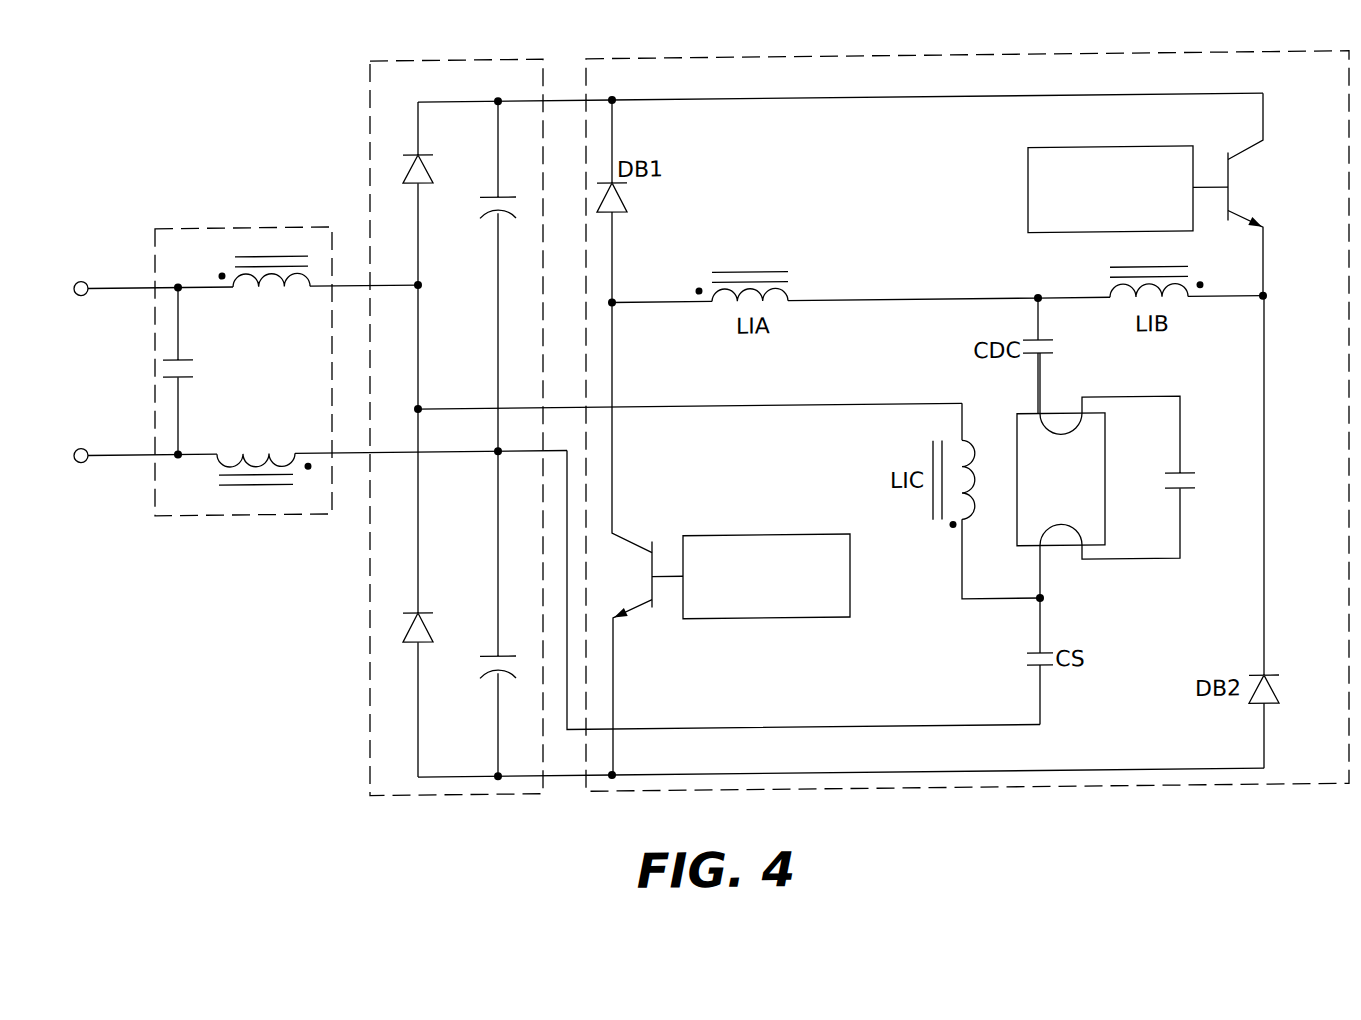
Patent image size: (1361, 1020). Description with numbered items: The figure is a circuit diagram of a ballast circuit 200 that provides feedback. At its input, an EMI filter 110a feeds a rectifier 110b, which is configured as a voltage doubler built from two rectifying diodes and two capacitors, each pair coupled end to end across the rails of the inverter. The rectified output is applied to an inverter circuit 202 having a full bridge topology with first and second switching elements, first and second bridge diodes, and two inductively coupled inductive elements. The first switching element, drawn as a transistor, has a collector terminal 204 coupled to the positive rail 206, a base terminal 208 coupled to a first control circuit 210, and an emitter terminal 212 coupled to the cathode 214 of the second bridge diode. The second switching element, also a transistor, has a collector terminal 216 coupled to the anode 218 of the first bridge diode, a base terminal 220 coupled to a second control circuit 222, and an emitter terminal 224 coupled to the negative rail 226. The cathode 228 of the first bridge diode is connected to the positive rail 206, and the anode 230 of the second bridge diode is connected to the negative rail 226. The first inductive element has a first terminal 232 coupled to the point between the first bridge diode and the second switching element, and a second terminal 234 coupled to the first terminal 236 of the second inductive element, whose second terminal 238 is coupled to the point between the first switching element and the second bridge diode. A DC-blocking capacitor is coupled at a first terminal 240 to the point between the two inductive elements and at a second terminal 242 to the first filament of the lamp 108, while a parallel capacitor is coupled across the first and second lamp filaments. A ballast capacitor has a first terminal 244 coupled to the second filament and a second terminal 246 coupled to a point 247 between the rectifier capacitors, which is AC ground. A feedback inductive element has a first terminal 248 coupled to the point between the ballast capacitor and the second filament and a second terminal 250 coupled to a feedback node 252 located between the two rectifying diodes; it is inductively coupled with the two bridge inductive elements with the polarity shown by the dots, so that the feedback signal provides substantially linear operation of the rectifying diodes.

The ballast circuit 200 is at (713, 40).
The inverter circuit 202 is at (925, 91).
The collector terminal 204 is at (1264, 125).
The positive rail 206 is at (1160, 98).
The base terminal 208 is at (1213, 189).
The first control circuit 210 is at (1113, 150).
The emitter terminal 212 is at (1240, 224).
The cathode 214 is at (1264, 628).
The collector terminal 216 is at (614, 526).
The anode 218 is at (612, 239).
The base terminal 220 is at (668, 578).
The second control circuit 222 is at (760, 620).
The emitter terminal 224 is at (634, 612).
The negative rail 226 is at (762, 774).
The cathode 228 is at (612, 131).
The anode 230 is at (1264, 742).
The first terminal 232 is at (690, 304).
The second terminal 234 is at (886, 304).
The first terminal 236 is at (1066, 311).
The second terminal 238 is at (1207, 310).
The first terminal 240 is at (1036, 328).
The second terminal 242 is at (1041, 381).
The first terminal 244 is at (1043, 619).
The second terminal 246 is at (1043, 712).
The point 247 is at (497, 452).
The first terminal 248 is at (962, 580).
The second terminal 250 is at (963, 422).
The feedback node 252 is at (420, 406).
The fluorescent lamp 108 is at (1106, 472).
The EMI filter 110a is at (222, 224).
The rectifier circuit 110b is at (430, 89).